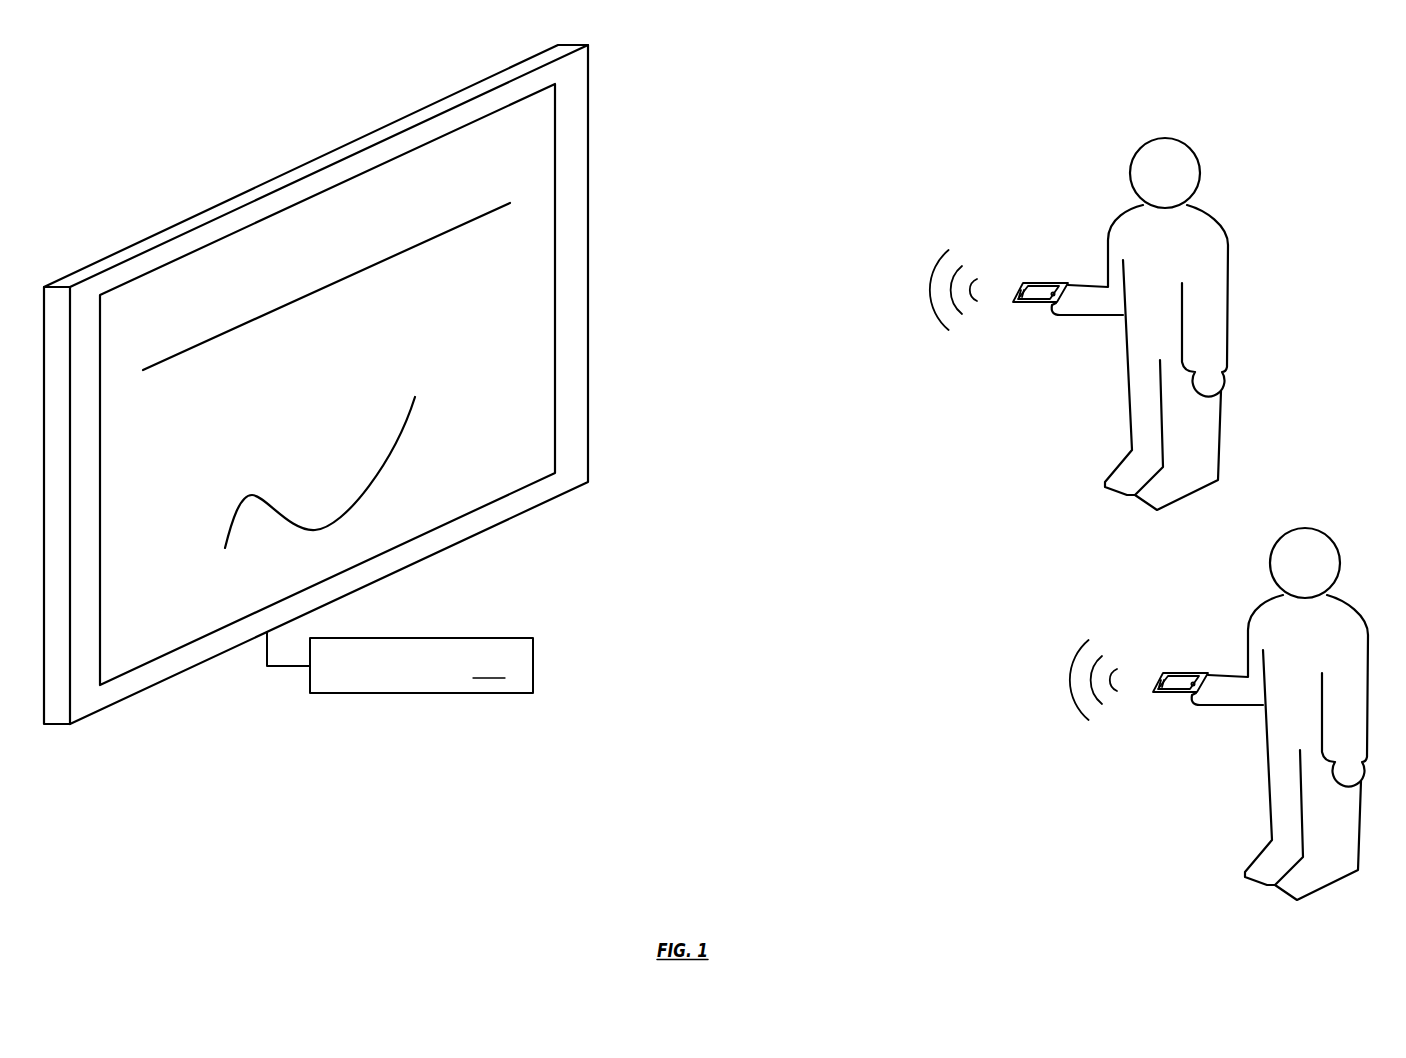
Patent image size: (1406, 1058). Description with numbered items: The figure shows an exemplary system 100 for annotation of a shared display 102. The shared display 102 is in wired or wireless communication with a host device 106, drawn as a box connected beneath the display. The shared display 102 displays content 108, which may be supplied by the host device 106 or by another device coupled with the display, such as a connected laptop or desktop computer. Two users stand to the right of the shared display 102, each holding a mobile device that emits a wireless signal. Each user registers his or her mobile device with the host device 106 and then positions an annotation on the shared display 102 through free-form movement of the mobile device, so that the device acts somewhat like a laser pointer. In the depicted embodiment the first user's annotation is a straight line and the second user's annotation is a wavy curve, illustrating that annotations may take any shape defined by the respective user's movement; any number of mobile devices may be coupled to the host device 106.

The system 100 is at (1333, 86).
The shared display 102 is at (587, 138).
The host device 106 is at (400, 662).
The content 108 is at (510, 178).